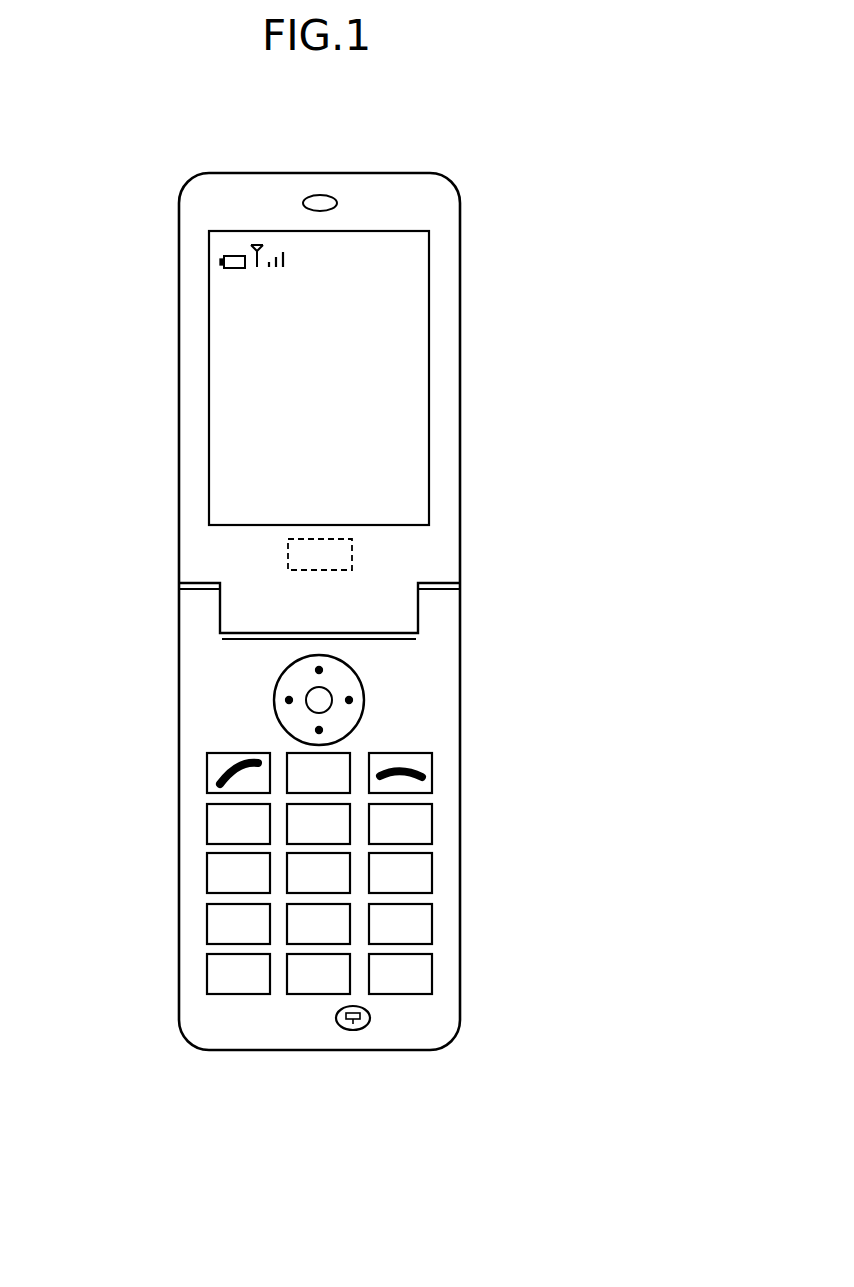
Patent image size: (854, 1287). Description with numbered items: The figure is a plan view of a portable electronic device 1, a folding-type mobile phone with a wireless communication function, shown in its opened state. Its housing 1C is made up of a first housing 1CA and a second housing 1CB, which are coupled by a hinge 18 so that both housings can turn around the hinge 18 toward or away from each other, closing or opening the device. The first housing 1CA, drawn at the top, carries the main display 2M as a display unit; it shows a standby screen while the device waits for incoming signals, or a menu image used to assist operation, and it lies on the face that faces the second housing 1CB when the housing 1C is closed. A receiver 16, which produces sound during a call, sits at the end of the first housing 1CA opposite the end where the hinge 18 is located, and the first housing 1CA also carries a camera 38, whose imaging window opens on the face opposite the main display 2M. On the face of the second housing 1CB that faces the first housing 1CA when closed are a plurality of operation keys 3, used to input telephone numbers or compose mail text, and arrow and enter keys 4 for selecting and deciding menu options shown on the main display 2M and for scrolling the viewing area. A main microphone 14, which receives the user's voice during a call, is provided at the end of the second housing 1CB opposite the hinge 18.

The portable electronic device 1 is at (483, 151).
The receiver 16 is at (319, 195).
The main display 2M is at (227, 290).
The camera 38 is at (353, 550).
The housing 1C is at (85, 542).
The first housing 1CA is at (228, 553).
The second housing 1CB is at (228, 666).
The hinge 18 is at (474, 608).
The arrow and enter keys 4 is at (364, 684).
The operation keys 3 is at (432, 748).
The main microphone 14 is at (350, 1030).